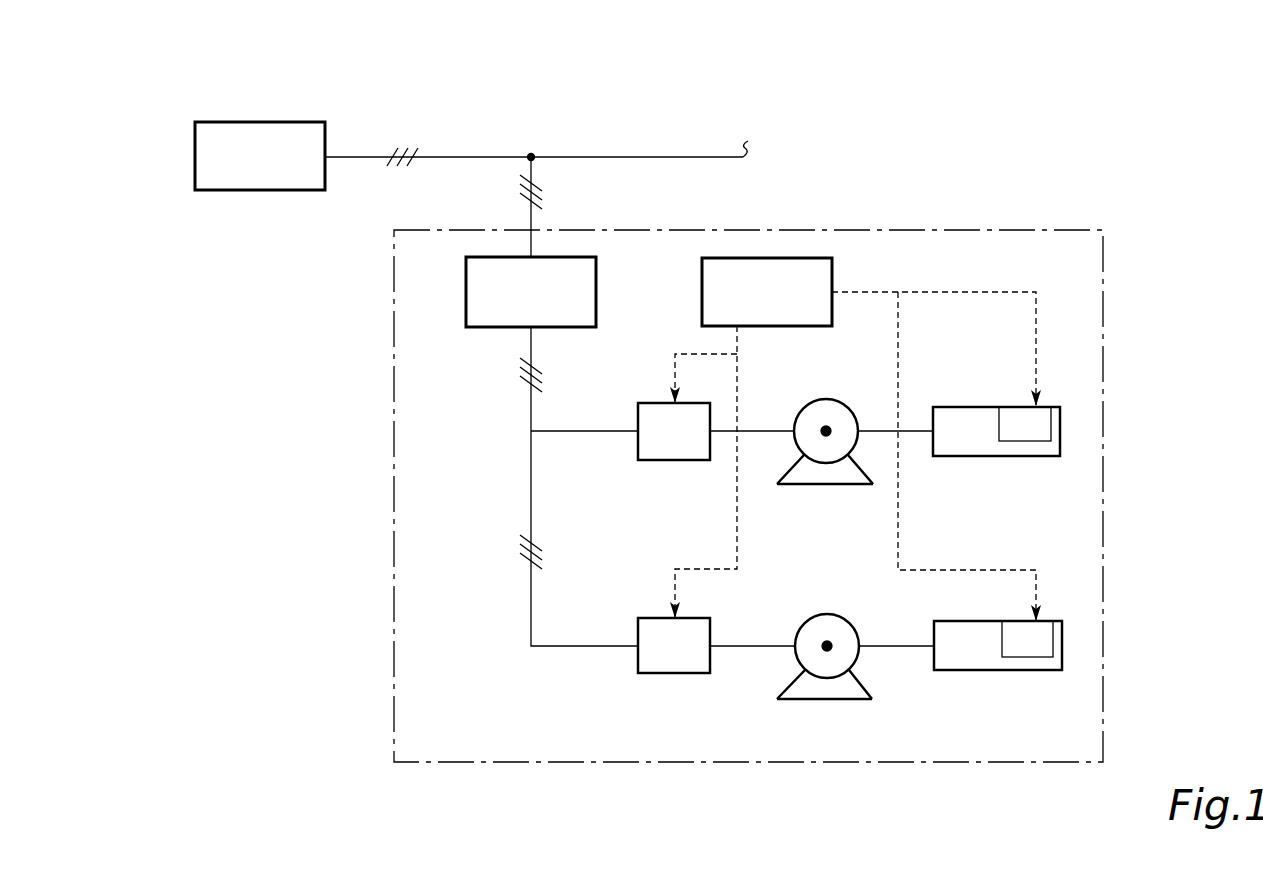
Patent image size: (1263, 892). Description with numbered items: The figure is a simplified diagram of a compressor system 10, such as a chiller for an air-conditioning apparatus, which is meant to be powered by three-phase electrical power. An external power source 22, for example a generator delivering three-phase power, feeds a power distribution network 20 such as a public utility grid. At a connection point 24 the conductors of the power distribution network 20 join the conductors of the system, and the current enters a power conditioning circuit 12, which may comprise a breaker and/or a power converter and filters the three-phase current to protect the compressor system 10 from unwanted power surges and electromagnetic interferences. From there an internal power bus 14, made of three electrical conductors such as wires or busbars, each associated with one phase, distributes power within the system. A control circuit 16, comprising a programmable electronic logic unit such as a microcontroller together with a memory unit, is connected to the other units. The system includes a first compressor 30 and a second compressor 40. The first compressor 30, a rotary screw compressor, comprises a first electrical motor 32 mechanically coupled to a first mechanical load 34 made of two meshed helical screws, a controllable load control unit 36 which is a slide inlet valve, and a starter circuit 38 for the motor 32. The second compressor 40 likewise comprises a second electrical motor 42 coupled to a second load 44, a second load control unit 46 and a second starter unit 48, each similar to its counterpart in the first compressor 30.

The compressor system 10 is at (1037, 222).
The power conditioning circuit 12 is at (531, 292).
The internal power bus 14 is at (531, 493).
The control circuit 16 is at (855, 439).
The power distribution network 20 is at (621, 135).
The power source 22 is at (260, 156).
The connection point 24 is at (531, 155).
The first compressor 30 is at (835, 419).
The first electrical motor 32 is at (840, 470).
The first mechanical load 34 is at (972, 417).
The load control unit 36 is at (1040, 425).
The starter circuit 38 is at (675, 442).
The second compressor 40 is at (853, 616).
The second electrical motor 42 is at (840, 656).
The second load 44 is at (976, 626).
The second load control unit 46 is at (1040, 637).
The second starter unit 48 is at (672, 667).